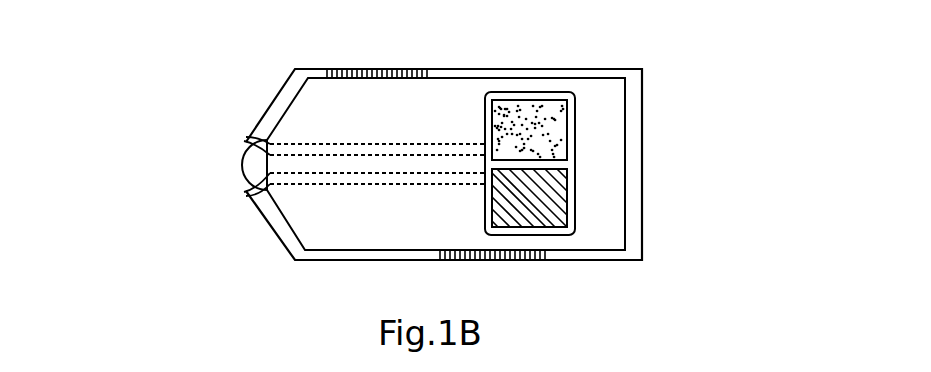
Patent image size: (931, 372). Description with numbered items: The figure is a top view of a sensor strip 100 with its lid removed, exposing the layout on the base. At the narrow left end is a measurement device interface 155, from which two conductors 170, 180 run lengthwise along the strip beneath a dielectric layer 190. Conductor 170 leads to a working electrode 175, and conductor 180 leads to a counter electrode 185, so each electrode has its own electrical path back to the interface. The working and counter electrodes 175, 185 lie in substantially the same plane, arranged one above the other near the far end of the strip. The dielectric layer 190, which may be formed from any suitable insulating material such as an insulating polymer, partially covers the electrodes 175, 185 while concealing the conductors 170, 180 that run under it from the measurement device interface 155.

The sensor strip 100 is at (673, 91).
The measurement device interface 155 is at (266, 165).
The conductor 170 is at (246, 142).
The working electrode 175 is at (526, 118).
The conductor 180 is at (246, 191).
The counter electrode 185 is at (540, 218).
The dielectric layer 190 is at (612, 226).